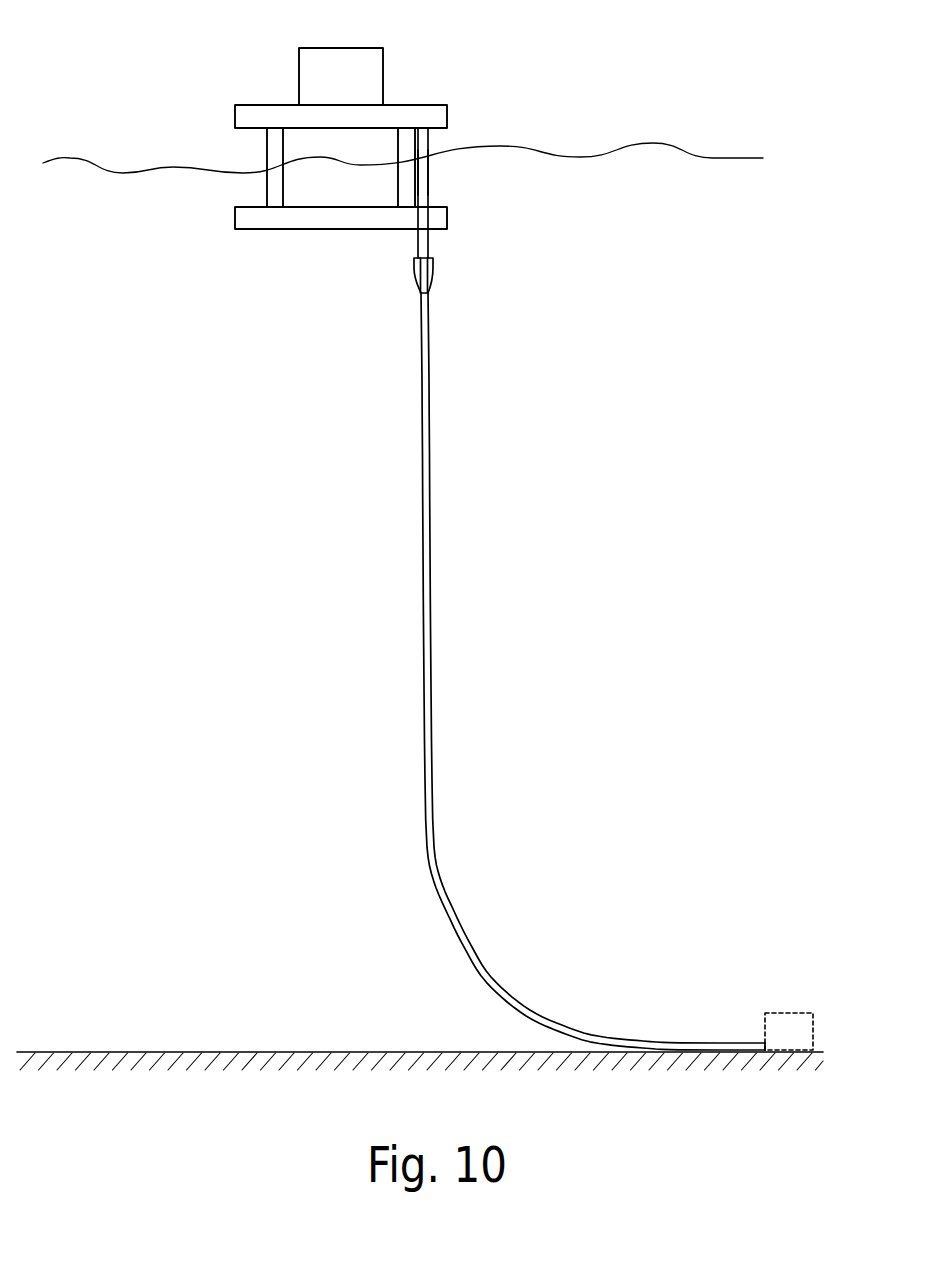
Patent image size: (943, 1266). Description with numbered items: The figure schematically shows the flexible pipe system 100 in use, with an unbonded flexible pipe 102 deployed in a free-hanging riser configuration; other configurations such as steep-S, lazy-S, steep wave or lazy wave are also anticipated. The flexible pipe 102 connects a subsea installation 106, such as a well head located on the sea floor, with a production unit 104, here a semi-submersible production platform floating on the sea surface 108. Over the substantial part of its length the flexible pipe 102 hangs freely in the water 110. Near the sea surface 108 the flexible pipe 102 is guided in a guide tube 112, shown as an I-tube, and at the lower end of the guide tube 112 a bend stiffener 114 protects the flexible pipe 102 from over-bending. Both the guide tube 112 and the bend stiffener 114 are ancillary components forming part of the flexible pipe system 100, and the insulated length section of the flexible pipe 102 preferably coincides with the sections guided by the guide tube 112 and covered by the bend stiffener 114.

The flexible pipe system 100 is at (440, 238).
The unbonded flexible pipe 102 is at (425, 432).
The production unit 104 is at (402, 75).
The subsea installation 106 is at (782, 1033).
The sea surface 108 is at (713, 158).
The water 110 is at (183, 338).
The guide tube 112 is at (420, 172).
The bend stiffener 114 is at (432, 272).